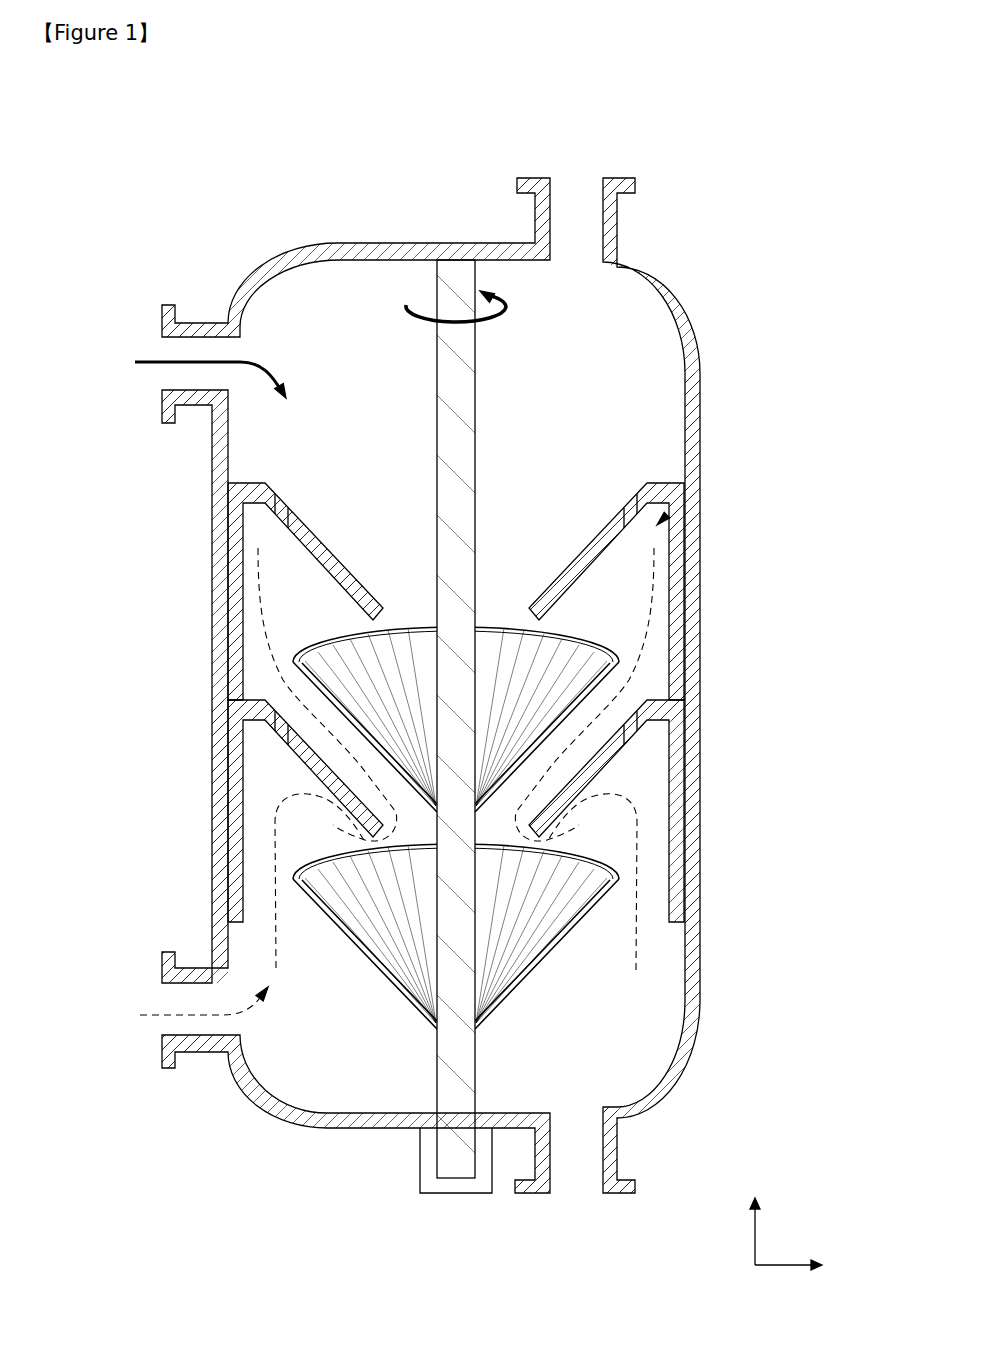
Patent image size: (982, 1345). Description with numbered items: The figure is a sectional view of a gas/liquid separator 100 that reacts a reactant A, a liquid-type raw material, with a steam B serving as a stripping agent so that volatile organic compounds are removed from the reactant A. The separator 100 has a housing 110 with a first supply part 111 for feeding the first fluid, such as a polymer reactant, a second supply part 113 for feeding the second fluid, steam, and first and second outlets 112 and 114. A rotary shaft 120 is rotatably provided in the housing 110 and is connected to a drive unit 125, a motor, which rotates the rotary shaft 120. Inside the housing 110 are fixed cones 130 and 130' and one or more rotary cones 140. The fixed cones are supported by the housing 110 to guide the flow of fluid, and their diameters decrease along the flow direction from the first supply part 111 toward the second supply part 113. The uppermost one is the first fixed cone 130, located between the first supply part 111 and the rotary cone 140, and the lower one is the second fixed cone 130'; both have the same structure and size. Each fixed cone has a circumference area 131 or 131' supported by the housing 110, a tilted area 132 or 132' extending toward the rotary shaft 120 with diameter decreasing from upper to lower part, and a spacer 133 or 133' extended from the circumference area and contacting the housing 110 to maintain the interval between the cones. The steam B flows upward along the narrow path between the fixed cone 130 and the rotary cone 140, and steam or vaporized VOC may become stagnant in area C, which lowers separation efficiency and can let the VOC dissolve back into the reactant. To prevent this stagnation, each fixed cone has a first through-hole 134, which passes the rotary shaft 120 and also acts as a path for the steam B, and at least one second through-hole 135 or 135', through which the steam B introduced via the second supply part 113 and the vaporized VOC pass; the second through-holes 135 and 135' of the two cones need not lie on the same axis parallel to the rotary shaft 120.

The gas/liquid separator 100 is at (160, 129).
The housing 110 is at (457, 685).
The first supply part 111 is at (198, 320).
The first outlet 112 is at (610, 1147).
The second supply part 113 is at (192, 1057).
The second outlet 114 is at (618, 215).
The rotary shaft 120 is at (455, 278).
The drive unit 125 is at (420, 1168).
The first fixed cone 130 is at (418, 577).
The circumference area 131 is at (402, 489).
The tilted area 132 is at (383, 551).
The spacer 133 is at (187, 601).
The first through-hole 134 is at (682, 602).
The second through-hole 135 is at (427, 678).
The second fixed cone 130' is at (416, 795).
The circumference area 131' is at (398, 707).
The tilted area 132' is at (379, 768).
The spacer 133' is at (183, 821).
The second through-hole 135' is at (442, 819).
The rotary cone 140 is at (620, 652).
The reactant A is at (140, 360).
The steam B is at (142, 1015).
The stagnation area C is at (668, 516).